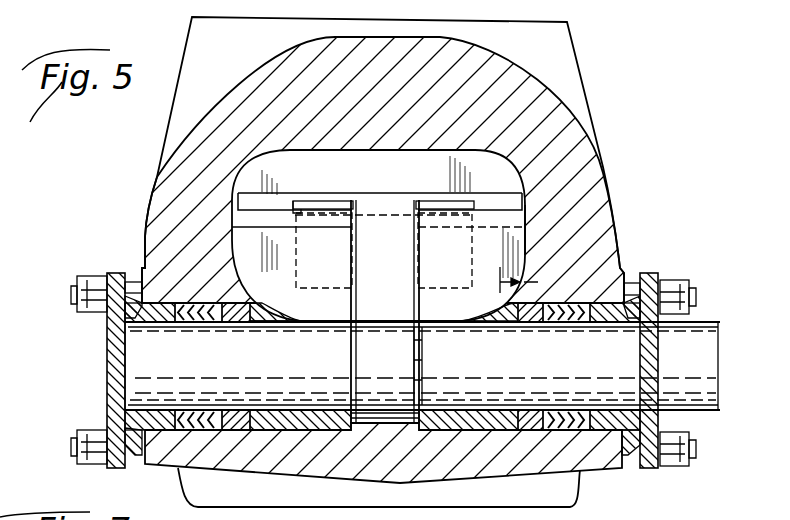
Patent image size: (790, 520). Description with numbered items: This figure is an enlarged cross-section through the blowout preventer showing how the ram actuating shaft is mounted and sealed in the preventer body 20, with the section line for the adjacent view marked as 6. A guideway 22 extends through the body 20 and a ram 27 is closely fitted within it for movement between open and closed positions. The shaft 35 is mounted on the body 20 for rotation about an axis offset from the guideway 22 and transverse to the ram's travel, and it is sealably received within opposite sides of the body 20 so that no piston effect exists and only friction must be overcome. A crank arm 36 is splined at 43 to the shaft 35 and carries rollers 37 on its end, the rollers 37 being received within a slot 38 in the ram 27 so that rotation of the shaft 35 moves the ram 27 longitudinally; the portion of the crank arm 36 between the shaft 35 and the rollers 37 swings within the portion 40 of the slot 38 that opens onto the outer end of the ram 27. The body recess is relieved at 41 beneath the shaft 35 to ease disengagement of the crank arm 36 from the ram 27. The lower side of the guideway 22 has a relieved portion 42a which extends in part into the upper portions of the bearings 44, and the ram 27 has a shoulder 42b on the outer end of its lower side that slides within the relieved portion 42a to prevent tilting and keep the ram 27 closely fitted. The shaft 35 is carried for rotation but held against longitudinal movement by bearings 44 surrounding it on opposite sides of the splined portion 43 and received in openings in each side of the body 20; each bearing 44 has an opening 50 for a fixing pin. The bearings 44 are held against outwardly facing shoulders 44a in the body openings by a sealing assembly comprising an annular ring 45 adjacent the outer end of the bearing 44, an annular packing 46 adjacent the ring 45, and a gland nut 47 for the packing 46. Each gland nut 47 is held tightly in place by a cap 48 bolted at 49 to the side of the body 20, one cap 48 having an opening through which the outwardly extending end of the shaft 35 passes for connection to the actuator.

The body 20 is at (585, 72).
The guideway 22 is at (384, 151).
The rollers 37 is at (318, 203).
The slot 38 is at (301, 213).
The ram 27 is at (322, 271).
The portion of the slot 40 is at (410, 233).
The relieved portion 42a is at (530, 272).
The shoulder 42b is at (436, 332).
The crank arm 36 is at (396, 273).
The shaft 35 is at (700, 367).
The splined portion 43 is at (352, 353).
The relief 41 is at (378, 422).
The annular packing 46 is at (587, 326).
The annular ring 45 is at (535, 412).
The opening in the bearing 50 is at (270, 330).
The bearings 44 is at (278, 422).
The outwardly facing shoulders 44a is at (280, 432).
The cap 48 is at (107, 356).
The gland nut 47 is at (107, 316).
The bolts 49 is at (79, 282).
The section line for FIG. 6 is at (534, 290).